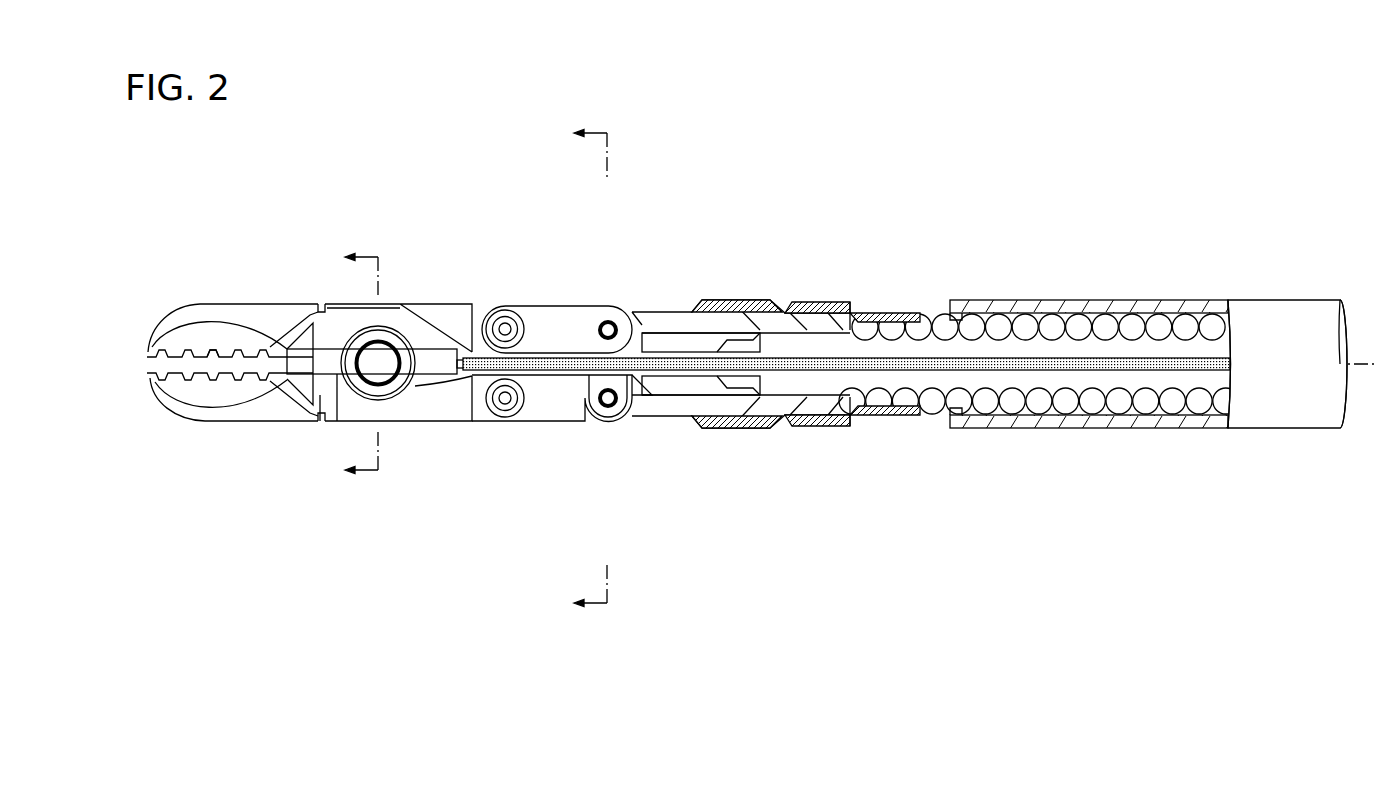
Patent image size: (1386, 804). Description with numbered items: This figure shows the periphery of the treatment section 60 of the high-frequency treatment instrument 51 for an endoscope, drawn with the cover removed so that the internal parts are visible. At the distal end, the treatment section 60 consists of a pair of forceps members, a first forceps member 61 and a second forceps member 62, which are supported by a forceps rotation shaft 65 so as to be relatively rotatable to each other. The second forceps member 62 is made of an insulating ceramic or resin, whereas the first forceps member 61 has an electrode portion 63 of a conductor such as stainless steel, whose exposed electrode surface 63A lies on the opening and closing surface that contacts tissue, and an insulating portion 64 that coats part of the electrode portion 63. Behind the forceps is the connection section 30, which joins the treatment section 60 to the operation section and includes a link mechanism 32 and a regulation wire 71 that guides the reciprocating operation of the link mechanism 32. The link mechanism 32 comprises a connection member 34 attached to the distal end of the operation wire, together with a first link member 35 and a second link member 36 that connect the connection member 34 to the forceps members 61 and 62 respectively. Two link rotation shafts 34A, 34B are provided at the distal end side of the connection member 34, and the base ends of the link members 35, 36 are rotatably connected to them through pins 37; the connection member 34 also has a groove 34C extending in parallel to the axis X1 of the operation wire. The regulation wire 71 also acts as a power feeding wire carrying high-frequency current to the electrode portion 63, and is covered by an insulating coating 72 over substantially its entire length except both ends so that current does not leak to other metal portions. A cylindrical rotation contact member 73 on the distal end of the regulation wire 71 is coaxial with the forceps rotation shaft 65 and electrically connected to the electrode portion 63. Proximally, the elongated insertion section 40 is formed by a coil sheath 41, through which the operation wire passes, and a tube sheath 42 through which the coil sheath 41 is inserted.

The high-frequency treatment instrument 51 is at (985, 150).
The axis of the operation wire X1 is at (1350, 364).
The regulation wire 71 is at (558, 400).
The treatment section 60 is at (350, 238).
The first forceps member 61 is at (240, 454).
The second forceps member 62 is at (258, 272).
The electrode portion 63 is at (173, 385).
The electrode surface 63A is at (211, 372).
The insulating portion 64 is at (280, 405).
The forceps rotation shaft 65 is at (372, 372).
The rotation contact member 73 is at (432, 372).
The connection section 30 is at (633, 282).
The first link member 35 is at (549, 306).
The second link member 36 is at (540, 408).
The pin 37 is at (618, 373).
The link rotation shaft 34A is at (631, 266).
The link rotation shaft 34B is at (611, 471).
The link mechanism 32 is at (651, 471).
The connection member 34 is at (741, 373).
The groove 34C is at (703, 378).
The insulating coating 72 is at (666, 370).
The insertion section 40 is at (1219, 251).
The coil sheath 41 is at (1040, 407).
The tube sheath 42 is at (1100, 430).